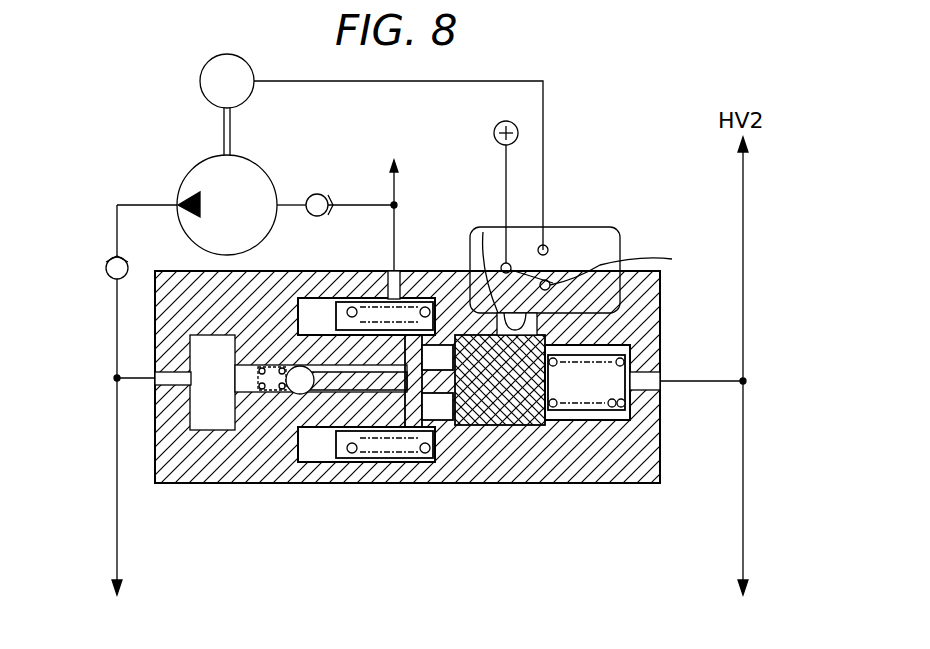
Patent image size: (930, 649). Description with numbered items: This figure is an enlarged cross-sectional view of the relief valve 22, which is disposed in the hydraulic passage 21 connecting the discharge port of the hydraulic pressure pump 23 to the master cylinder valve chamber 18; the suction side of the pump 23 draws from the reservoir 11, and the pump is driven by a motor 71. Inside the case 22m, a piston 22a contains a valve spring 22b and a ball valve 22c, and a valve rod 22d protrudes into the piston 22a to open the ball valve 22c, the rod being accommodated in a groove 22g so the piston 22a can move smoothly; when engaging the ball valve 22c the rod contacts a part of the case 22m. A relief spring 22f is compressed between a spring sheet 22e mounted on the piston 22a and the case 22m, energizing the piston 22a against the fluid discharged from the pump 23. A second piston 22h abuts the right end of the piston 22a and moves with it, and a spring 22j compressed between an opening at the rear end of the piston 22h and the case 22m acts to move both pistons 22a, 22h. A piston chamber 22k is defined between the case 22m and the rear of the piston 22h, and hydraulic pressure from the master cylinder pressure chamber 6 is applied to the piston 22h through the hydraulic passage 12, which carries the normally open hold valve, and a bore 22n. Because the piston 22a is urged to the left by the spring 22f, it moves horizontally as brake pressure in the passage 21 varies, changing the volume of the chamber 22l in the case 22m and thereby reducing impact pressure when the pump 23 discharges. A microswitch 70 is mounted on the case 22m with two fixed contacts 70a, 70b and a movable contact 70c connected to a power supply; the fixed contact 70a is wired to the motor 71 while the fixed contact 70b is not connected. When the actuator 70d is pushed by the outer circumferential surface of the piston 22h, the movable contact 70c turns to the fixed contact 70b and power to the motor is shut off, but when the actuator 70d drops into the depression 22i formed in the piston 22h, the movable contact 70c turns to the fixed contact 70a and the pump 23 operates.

The motor 71 is at (252, 66).
The hydraulic pressure pump 23 is at (275, 180).
The reservoir 11 is at (397, 201).
The hydraulic passage 21 is at (117, 452).
The valve chamber 18 is at (119, 603).
The hydraulic passage 12 is at (748, 398).
The hydraulic pressure chamber 6 is at (744, 603).
The microswitch 70 is at (575, 225).
The fixed contact 70a is at (565, 228).
The fixed contact 70b is at (614, 268).
The movable contact 70c is at (496, 215).
The actuator 70d is at (486, 226).
The relief valve 22 is at (178, 490).
The piston 22a is at (235, 435).
The valve spring 22b is at (283, 425).
The ball valve 22c is at (310, 440).
The valve rod 22d is at (360, 462).
The spring sheet 22e is at (340, 298).
The relief spring 22f is at (420, 462).
The groove 22g is at (440, 335).
The piston 22h is at (460, 425).
The depression 22i is at (640, 322).
The spring 22j is at (625, 398).
The piston chamber 22k is at (615, 425).
The case 22m is at (527, 462).
The bore 22n is at (655, 362).
The chamber 22l is at (210, 345).